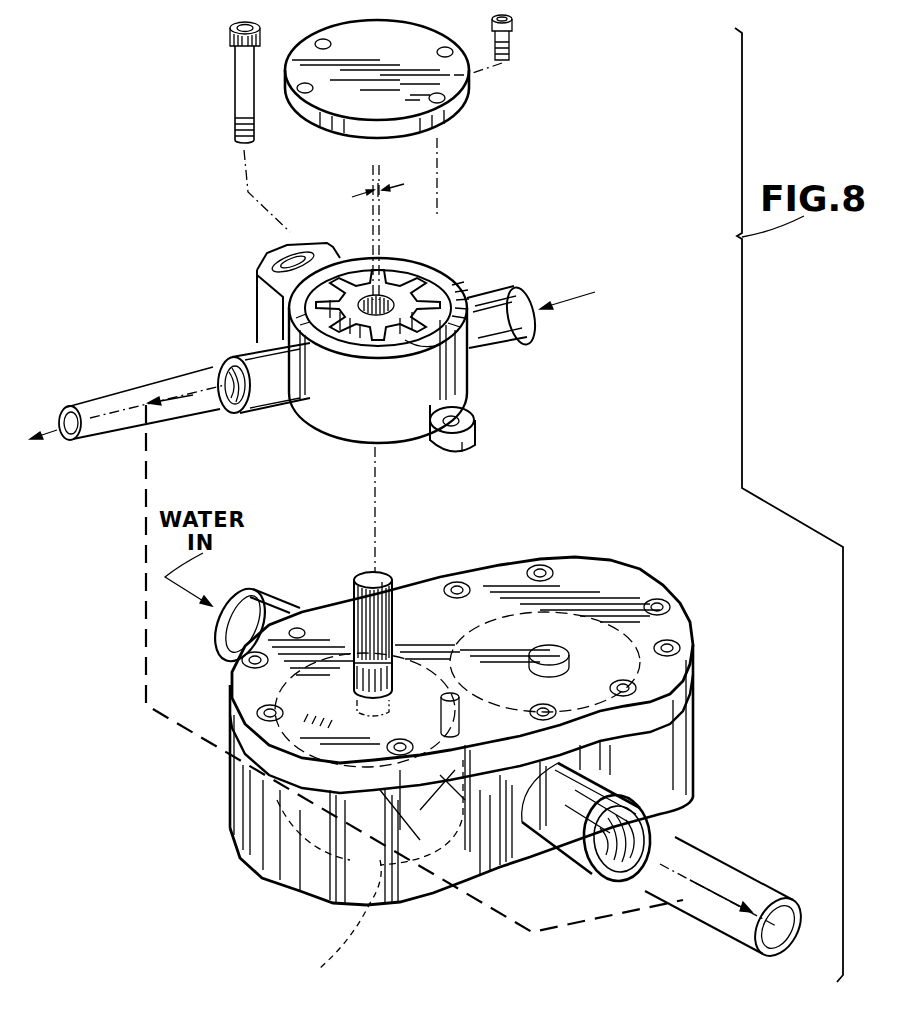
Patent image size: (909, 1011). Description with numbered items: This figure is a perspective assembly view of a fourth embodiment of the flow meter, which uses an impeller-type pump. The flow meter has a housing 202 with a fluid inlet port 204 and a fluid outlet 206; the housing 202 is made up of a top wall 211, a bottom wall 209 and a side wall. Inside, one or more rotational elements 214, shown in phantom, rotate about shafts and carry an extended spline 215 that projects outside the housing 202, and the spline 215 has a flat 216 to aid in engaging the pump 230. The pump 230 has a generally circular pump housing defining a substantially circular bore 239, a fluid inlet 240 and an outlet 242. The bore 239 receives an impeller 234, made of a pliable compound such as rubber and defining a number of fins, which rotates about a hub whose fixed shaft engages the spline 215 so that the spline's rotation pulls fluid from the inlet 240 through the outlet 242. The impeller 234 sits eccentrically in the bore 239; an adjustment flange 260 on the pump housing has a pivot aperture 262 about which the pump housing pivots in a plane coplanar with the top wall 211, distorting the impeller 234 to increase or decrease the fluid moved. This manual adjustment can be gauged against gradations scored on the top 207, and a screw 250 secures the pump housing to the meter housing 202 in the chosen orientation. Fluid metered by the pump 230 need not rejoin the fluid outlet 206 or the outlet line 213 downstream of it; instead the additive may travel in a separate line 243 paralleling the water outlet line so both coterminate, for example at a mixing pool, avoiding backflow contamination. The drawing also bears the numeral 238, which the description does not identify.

The housing 202 is at (690, 727).
The fluid inlet port 204 is at (257, 587).
The fluid outlet 206 is at (603, 782).
The top 207 is at (612, 572).
The bottom wall 209 is at (277, 890).
The top wall 211 is at (233, 717).
The outlet line 213 is at (710, 850).
The rotational elements 214 is at (326, 921).
The extended spline 215 is at (356, 613).
The flat 216 is at (383, 625).
The pump 230 is at (448, 264).
The impeller 234 is at (413, 293).
The rotor 238 is at (375, 300).
The bore 239 is at (413, 343).
The fluid inlet 240 is at (527, 334).
The outlet 242 is at (243, 353).
The separate line 243 is at (100, 440).
The screw 250 is at (241, 87).
The adjustment flange 260 is at (470, 443).
The pivot aperture 262 is at (460, 421).